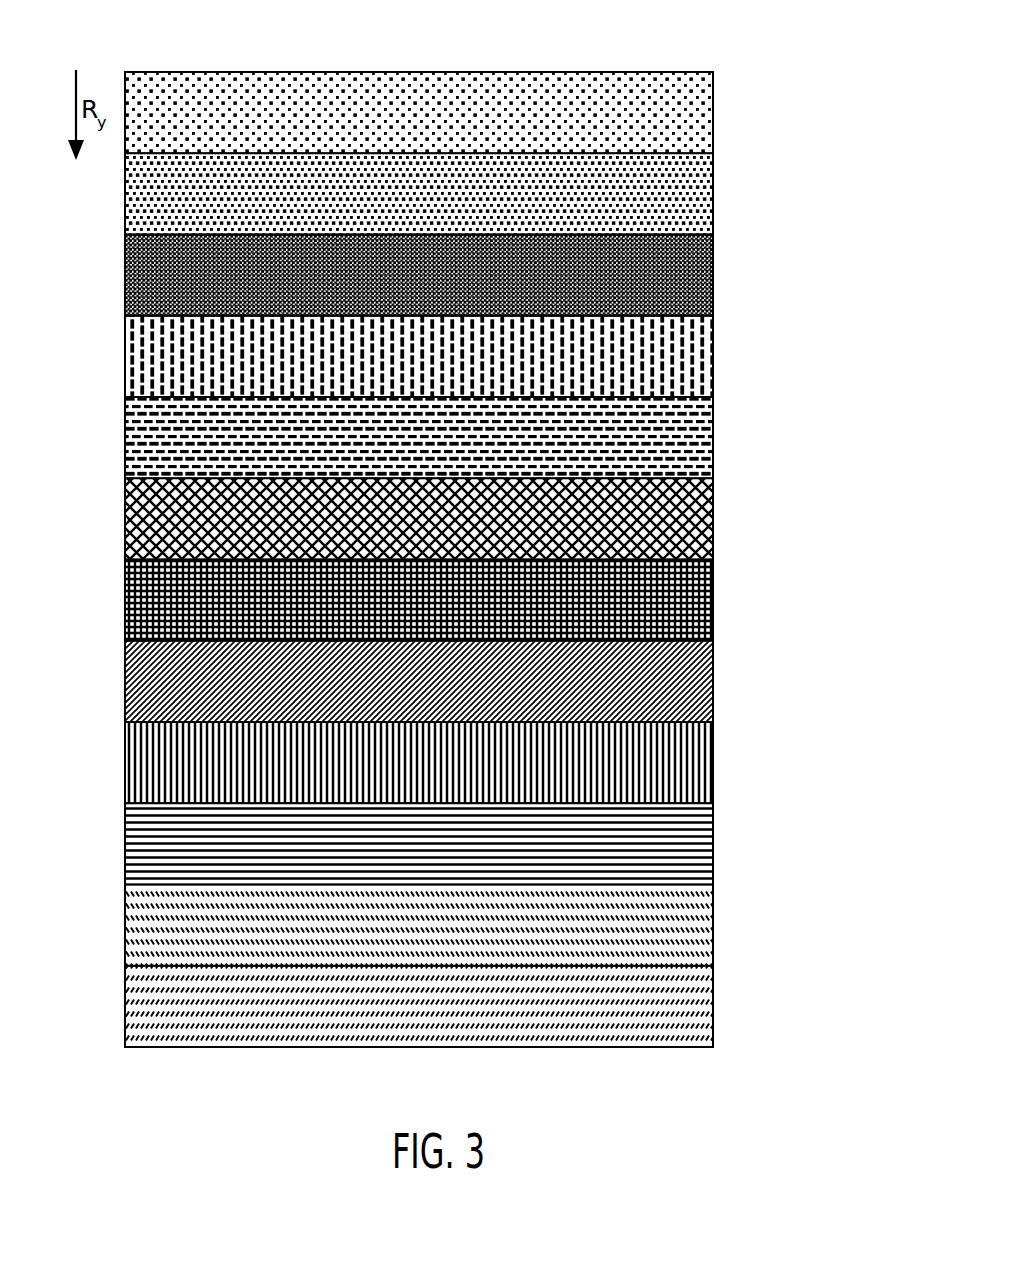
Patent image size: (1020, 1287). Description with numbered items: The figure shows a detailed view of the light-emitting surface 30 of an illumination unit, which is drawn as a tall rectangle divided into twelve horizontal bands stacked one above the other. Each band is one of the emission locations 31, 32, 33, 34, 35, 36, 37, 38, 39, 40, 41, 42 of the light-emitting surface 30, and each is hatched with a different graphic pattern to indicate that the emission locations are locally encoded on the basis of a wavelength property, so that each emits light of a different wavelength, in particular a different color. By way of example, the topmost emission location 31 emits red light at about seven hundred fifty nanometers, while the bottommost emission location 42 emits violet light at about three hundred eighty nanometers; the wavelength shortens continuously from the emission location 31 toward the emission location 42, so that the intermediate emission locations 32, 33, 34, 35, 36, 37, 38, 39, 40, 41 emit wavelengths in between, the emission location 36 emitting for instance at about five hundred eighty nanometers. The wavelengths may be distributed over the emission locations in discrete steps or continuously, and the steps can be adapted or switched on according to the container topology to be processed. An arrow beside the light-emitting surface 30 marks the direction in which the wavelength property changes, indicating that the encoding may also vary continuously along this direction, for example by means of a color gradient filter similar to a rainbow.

The light-emitting surface 30 is at (465, 524).
The emission location 31 is at (692, 115).
The emission location 32 is at (692, 196).
The emission location 33 is at (692, 277).
The emission location 34 is at (692, 358).
The emission location 35 is at (692, 440).
The emission location 36 is at (692, 521).
The emission location 37 is at (692, 602).
The emission location 38 is at (692, 683).
The emission location 39 is at (692, 765).
The emission location 40 is at (692, 846).
The emission location 41 is at (692, 927).
The emission location 42 is at (692, 1008).